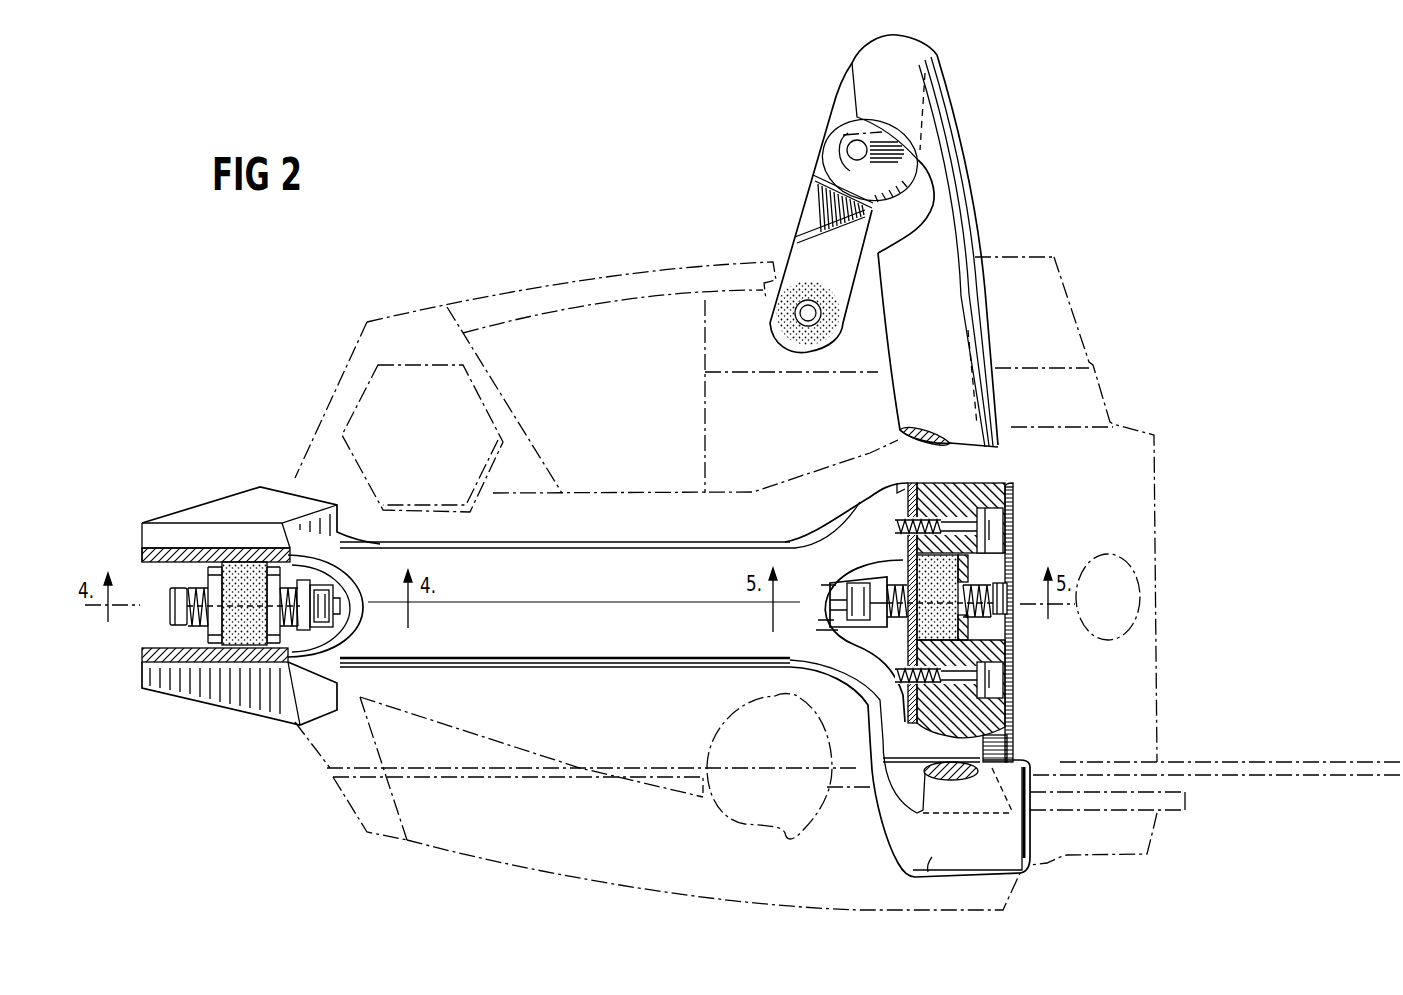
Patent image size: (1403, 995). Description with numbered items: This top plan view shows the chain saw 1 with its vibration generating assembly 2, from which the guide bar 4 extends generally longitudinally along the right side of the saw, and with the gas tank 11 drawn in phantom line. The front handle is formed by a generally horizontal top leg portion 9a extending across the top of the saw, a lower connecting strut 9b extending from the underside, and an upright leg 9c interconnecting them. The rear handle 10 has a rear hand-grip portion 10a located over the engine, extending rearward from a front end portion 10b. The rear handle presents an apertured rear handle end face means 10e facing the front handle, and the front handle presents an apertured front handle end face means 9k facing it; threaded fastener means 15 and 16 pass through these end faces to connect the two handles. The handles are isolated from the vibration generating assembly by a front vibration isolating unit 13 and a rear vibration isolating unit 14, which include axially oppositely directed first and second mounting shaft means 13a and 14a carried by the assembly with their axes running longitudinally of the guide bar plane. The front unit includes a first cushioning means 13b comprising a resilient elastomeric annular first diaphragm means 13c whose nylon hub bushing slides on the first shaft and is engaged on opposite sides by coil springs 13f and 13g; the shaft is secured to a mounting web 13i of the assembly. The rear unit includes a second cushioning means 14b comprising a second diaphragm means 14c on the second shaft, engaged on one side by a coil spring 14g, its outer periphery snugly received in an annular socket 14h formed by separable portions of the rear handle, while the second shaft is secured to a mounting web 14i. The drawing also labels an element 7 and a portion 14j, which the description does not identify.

The chain saw 1 is at (1095, 254).
The vibration generating assembly 2 is at (1114, 388).
The guide bar 4 is at (1247, 755).
The housing wall 7 is at (1158, 588).
The top leg portion 9a is at (960, 215).
The connecting strut 9b is at (811, 216).
The upright leg 9c is at (940, 54).
The front handle end face means 9k is at (930, 491).
The rear handle 10 is at (792, 664).
The rear hand-grip portion 10a is at (585, 572).
The front end portion 10b is at (852, 683).
The rear handle end face means 10e is at (906, 488).
The gas tank 11 is at (405, 327).
The front vibration isolating unit 13 is at (973, 570).
The first mounting shaft means 13a is at (968, 492).
The first cushioning means 13b is at (982, 542).
The first diaphragm means 13c is at (987, 638).
The coil spring 13f is at (985, 572).
The coil spring 13g is at (902, 576).
The mounting web 13i is at (886, 627).
The rear vibration isolating unit 14 is at (230, 660).
The second mounting shaft means 14a is at (174, 592).
The second cushioning means 14b is at (243, 663).
The second diaphragm means 14c is at (237, 575).
The coil spring 14g is at (178, 588).
The annular socket 14h is at (248, 557).
The mounting web 14i is at (307, 628).
The housing 14j is at (278, 556).
The threaded fastener means 15 is at (1005, 515).
The threaded fastener means 16 is at (1003, 690).